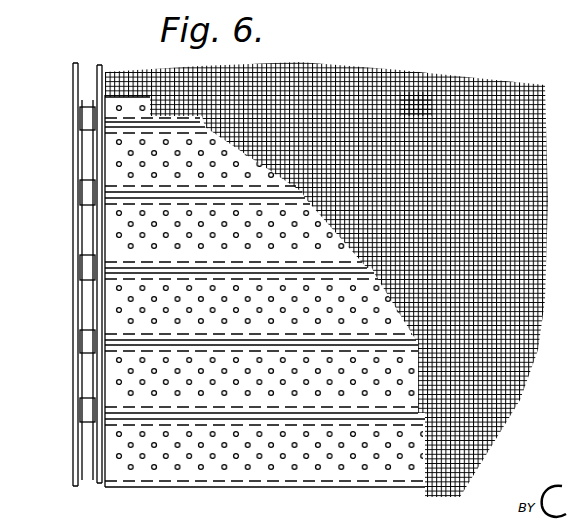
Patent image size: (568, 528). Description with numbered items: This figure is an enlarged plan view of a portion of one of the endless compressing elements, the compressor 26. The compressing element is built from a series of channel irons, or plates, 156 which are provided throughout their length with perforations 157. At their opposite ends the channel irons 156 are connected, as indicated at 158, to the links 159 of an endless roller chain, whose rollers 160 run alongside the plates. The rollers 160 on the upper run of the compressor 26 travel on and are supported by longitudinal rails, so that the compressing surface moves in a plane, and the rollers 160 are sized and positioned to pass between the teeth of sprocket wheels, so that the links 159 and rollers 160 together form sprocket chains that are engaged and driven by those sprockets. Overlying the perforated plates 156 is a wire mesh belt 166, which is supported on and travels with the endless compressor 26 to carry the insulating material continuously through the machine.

The endless compressor 26 is at (326, 269).
The channel irons 156 is at (114, 136).
The perforations 157 is at (129, 174).
The end connections 158 is at (100, 148).
The links 159 is at (73, 67).
The rollers 160 is at (86, 121).
The wire mesh belt 166 is at (415, 105).